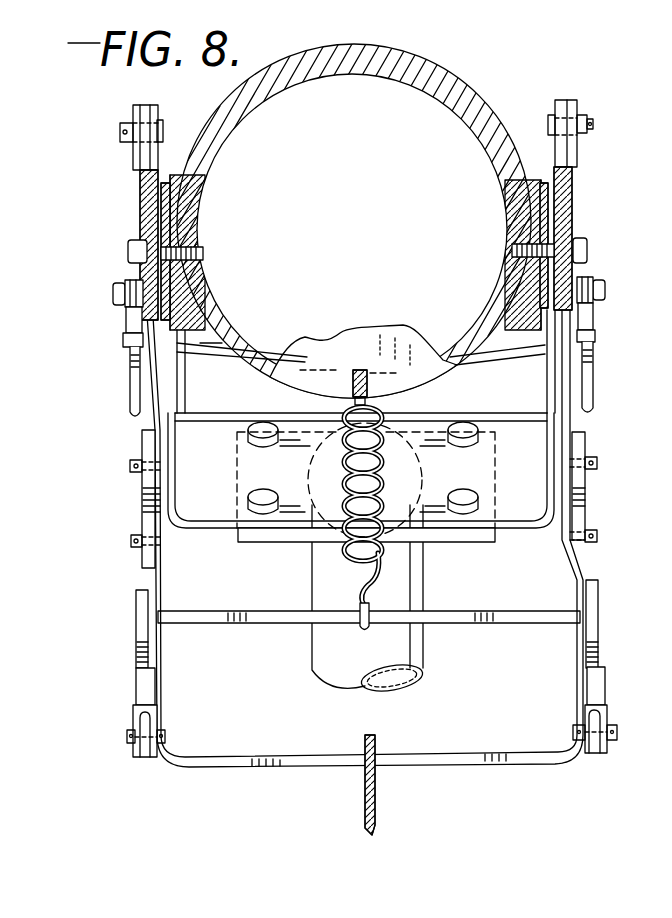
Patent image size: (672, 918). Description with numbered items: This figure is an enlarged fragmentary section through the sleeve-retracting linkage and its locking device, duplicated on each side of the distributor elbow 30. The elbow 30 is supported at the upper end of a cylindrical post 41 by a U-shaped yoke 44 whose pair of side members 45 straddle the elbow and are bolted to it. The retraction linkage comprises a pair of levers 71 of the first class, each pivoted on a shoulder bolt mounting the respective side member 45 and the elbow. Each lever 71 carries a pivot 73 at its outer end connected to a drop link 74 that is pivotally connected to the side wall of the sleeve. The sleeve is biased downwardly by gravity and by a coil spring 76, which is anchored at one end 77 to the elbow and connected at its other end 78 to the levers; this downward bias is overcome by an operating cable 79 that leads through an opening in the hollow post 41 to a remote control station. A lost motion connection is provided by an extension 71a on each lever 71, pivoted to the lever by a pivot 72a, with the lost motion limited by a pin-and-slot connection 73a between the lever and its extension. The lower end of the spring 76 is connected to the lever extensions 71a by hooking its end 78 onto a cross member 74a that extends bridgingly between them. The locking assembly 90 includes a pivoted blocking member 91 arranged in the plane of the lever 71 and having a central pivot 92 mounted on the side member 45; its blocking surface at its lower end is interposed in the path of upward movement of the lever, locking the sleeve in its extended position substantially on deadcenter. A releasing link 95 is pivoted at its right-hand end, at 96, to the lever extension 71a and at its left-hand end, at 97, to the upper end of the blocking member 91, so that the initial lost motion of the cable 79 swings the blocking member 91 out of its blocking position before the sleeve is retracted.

The distributor elbow 30 is at (445, 69).
The lever 71 is at (157, 113).
The lever extension 71a is at (142, 514).
The pivot 72a is at (133, 542).
The pivot 73 is at (120, 134).
The pin-and-slot connection 73a is at (130, 466).
The drop link 74 is at (133, 110).
The cross member 74a is at (450, 613).
The coil spring 76 is at (385, 492).
The spring end 77 is at (350, 400).
The spring end 78 is at (360, 606).
The cable 79 is at (378, 815).
The locking assembly 90 is at (133, 683).
The blocking member 91 is at (145, 215).
The central pivot 92 is at (128, 250).
The releasing link 95 is at (130, 378).
The pivot 96 is at (127, 737).
The pivot 97 is at (113, 294).
The cylindrical post 41 is at (312, 668).
The U-shaped yoke 44 is at (287, 532).
The side member 45 is at (547, 372).